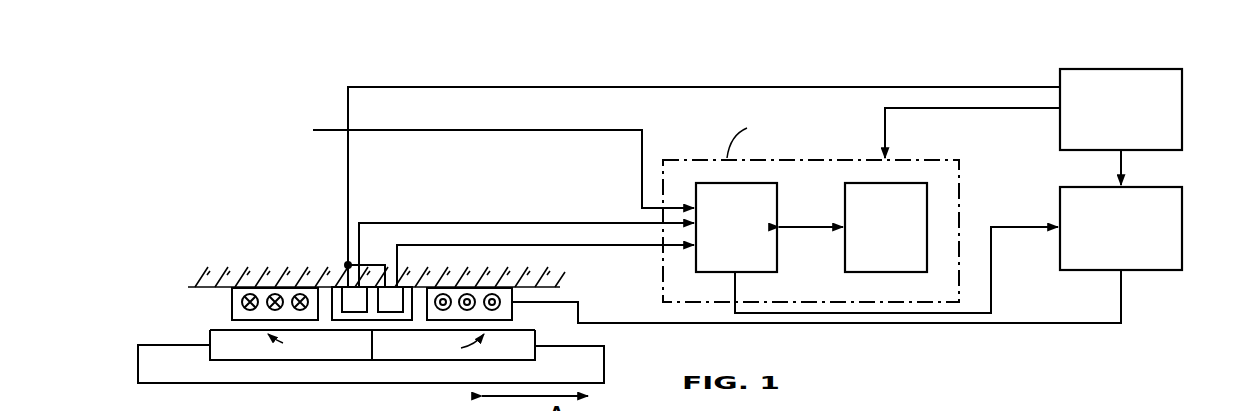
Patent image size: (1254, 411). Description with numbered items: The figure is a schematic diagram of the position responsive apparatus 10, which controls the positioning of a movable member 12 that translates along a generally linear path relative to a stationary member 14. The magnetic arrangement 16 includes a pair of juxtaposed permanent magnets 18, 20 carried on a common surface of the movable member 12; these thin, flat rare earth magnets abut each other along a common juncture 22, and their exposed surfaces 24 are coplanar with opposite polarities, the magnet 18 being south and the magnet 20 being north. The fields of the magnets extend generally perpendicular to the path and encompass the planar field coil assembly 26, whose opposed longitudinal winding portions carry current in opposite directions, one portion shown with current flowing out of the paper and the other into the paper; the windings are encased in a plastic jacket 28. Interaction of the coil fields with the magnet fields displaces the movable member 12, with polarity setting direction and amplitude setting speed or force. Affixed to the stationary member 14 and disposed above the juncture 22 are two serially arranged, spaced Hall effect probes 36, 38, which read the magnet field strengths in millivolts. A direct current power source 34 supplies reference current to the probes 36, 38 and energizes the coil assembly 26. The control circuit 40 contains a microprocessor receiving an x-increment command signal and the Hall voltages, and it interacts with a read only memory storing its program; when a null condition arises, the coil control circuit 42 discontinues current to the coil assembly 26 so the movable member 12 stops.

The position responsive apparatus 10 is at (482, 106).
The movable member 12 is at (138, 367).
The stationary member 14 is at (200, 283).
The magnetic arrangement 16 is at (172, 310).
The permanent magnet 18 is at (267, 353).
The permanent magnet 20 is at (517, 355).
The common juncture 22 is at (372, 345).
The exposed surfaces 24 is at (547, 320).
The field coil assembly 26 is at (515, 300).
The plastic jacket 28 is at (230, 293).
The power source 34 is at (1182, 87).
The Hall effect transducer 36 is at (331, 288).
The Hall effect transducer 38 is at (408, 300).
The control circuit 40 is at (959, 193).
The coil control circuit 42 is at (1182, 203).